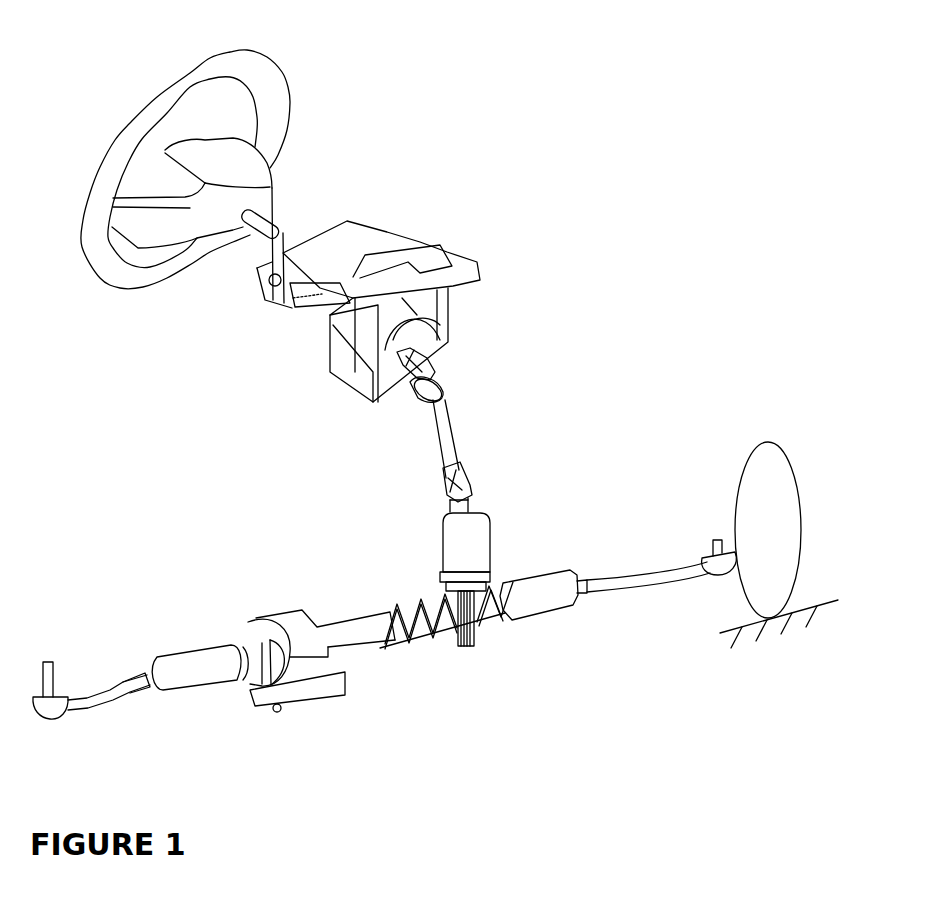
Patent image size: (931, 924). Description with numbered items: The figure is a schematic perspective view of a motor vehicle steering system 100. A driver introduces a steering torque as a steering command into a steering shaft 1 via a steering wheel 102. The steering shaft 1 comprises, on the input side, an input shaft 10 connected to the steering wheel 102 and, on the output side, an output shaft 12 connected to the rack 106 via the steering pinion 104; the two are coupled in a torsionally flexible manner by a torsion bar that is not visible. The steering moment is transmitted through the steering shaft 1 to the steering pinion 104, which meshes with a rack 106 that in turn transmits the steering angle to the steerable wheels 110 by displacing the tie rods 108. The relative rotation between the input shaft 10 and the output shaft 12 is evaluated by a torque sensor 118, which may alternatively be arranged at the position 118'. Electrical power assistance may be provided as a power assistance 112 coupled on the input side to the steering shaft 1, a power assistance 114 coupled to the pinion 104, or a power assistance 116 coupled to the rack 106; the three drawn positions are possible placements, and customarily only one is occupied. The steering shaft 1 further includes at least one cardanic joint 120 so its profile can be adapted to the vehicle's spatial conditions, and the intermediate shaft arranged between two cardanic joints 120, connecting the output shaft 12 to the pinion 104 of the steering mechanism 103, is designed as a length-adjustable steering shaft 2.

The motor vehicle steering system 100 is at (558, 99).
The steering wheel 102 is at (277, 91).
The steering shaft 1 is at (265, 221).
The length-adjustable steering shaft 2 is at (447, 415).
The input shaft 10 is at (287, 238).
The power assistance 112 is at (420, 330).
The output shaft 12 is at (412, 357).
The cardanic joint 120 is at (405, 372).
The torque sensor 118 is at (199, 290).
The alternative torque sensor position 118' is at (283, 518).
The power assistance 114 is at (478, 552).
The steering pinion 104 is at (464, 646).
The rack 106 is at (403, 623).
The steering mechanism 103 is at (406, 578).
The power assistance 116 is at (300, 632).
The tie rods 108 is at (123, 697).
The steerable wheels 110 is at (770, 462).